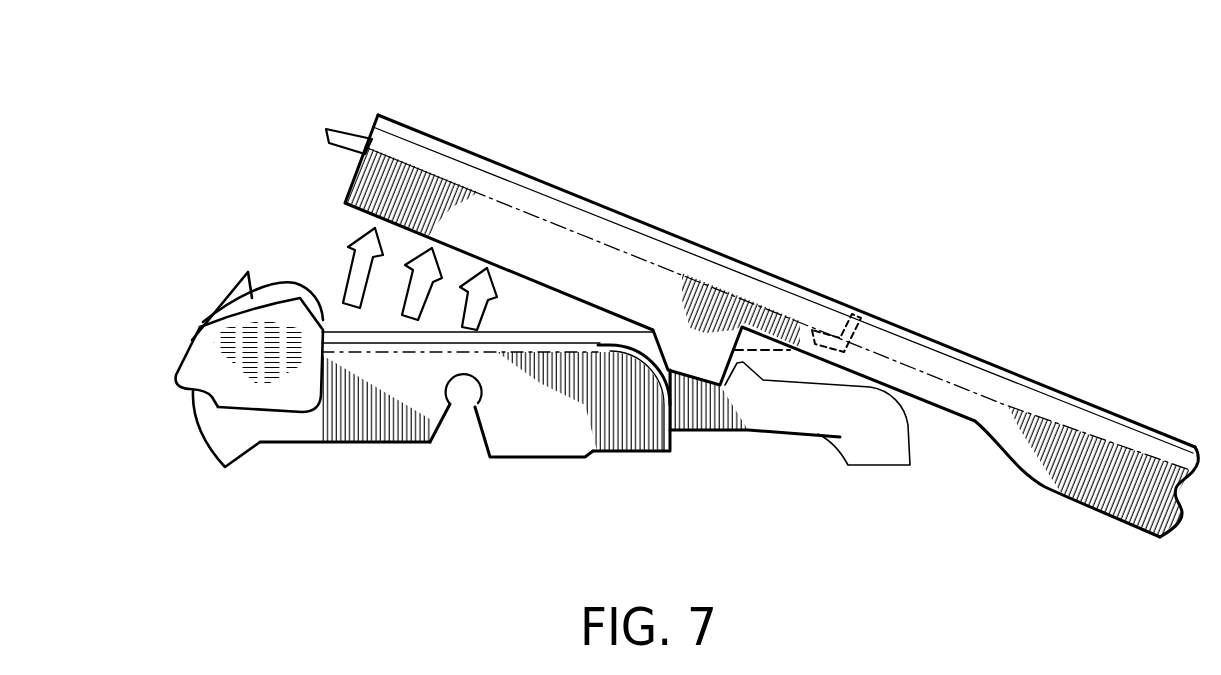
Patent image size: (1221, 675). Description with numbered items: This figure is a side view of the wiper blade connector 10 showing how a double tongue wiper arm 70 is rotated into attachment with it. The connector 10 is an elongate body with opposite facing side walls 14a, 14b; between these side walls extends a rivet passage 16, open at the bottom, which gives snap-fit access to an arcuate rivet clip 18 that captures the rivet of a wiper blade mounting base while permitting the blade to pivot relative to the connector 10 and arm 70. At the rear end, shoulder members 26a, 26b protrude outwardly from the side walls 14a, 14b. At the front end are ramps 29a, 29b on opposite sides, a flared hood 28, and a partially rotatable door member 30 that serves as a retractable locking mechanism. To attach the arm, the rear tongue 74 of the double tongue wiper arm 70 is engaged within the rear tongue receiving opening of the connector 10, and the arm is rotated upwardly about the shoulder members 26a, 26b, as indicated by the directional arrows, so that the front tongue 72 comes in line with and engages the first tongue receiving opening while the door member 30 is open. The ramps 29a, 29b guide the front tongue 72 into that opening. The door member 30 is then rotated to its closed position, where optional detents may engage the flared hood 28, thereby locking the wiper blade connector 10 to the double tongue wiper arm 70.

The wiper blade connector 10 is at (550, 444).
The side wall 14a is at (627, 427).
The side wall 14b is at (603, 393).
The rivet passage 16 is at (450, 447).
The arcuate rivet clip 18 is at (474, 390).
The shoulder member 26a is at (849, 450).
The shoulder member 26b is at (797, 408).
The flared hood 28 is at (230, 297).
The ramp 29a is at (190, 347).
The ramp 29b is at (232, 319).
The partially rotatable door member 30 is at (227, 433).
The double tongue wiper arm 70 is at (790, 271).
The front tongue 72 is at (350, 131).
The rear tongue 74 is at (863, 338).